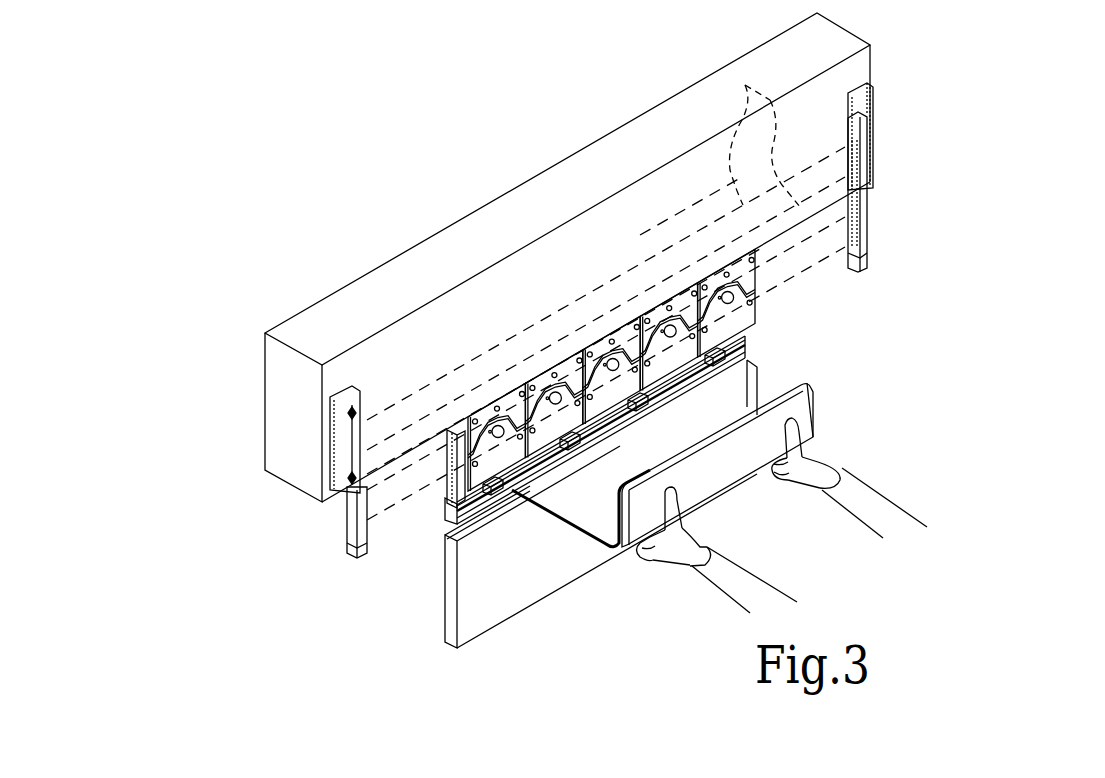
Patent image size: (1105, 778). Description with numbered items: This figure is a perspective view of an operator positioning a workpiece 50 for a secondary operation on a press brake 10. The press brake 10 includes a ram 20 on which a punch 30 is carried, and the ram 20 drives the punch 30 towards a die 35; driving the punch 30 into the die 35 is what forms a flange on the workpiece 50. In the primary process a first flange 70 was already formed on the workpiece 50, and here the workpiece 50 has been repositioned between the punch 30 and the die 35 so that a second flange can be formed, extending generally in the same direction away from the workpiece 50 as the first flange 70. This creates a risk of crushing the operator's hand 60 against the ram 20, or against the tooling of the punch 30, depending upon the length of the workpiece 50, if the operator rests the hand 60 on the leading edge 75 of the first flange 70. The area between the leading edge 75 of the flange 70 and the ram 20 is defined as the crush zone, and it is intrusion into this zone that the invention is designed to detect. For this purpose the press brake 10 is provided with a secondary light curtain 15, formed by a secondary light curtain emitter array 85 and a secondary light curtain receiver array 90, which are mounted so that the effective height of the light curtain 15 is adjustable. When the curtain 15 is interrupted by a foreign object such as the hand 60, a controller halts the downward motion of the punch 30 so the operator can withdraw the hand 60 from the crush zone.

The press brake 10 is at (295, 238).
The secondary light curtain 15 is at (745, 85).
The ram 20 is at (552, 272).
The punch 30 is at (445, 525).
The die 35 is at (447, 537).
The workpiece 50 is at (558, 492).
The operator's hand 60 is at (820, 463).
The first flange 70 is at (583, 532).
The leading edge 75 is at (783, 384).
The secondary light curtain emitter array 85 is at (867, 140).
The secondary light curtain receiver array 90 is at (353, 520).